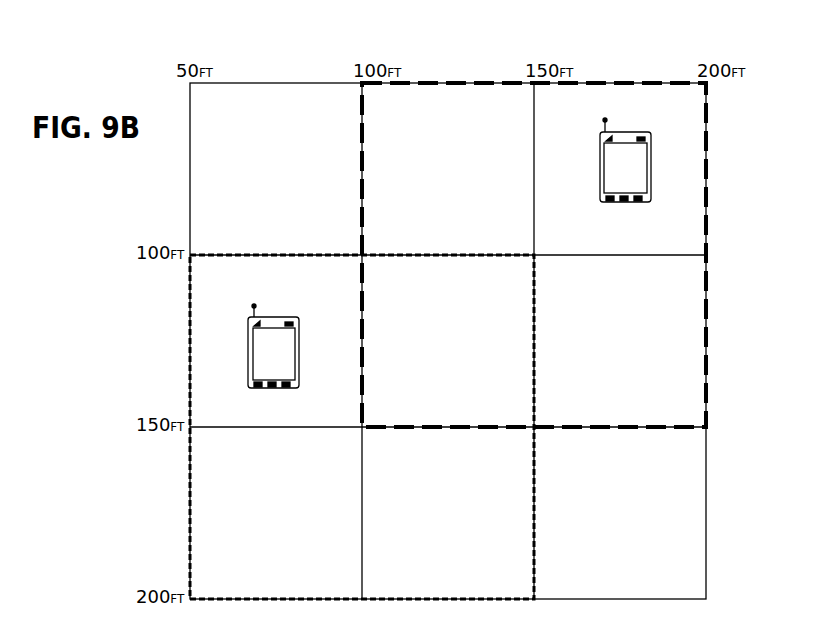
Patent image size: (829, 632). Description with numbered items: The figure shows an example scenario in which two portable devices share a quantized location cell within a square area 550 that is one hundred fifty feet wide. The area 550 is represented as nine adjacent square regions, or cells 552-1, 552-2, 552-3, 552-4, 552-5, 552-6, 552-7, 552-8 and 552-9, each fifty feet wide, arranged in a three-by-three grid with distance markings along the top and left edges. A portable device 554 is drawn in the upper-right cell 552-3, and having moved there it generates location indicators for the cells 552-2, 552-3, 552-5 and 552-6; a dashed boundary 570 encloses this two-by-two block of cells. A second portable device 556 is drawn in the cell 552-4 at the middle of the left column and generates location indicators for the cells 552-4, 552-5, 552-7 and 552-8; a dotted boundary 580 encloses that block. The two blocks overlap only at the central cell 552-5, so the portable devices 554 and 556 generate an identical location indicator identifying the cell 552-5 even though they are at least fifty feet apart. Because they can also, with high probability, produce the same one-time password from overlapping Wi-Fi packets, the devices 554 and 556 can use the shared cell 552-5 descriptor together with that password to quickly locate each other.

The square area 550 is at (466, 65).
The cell 552-1 is at (276, 169).
The cell 552-2 is at (448, 169).
The cell 552-3 is at (620, 169).
The cell 552-4 is at (276, 341).
The cell 552-5 is at (448, 341).
The cell 552-6 is at (620, 341).
The cell 552-7 is at (276, 513).
The cell 552-8 is at (448, 513).
The cell 552-9 is at (620, 513).
The portable device 554 is at (630, 203).
The portable device 556 is at (280, 389).
The dashed region boundary 570 is at (360, 213).
The dotted region boundary 580 is at (245, 253).